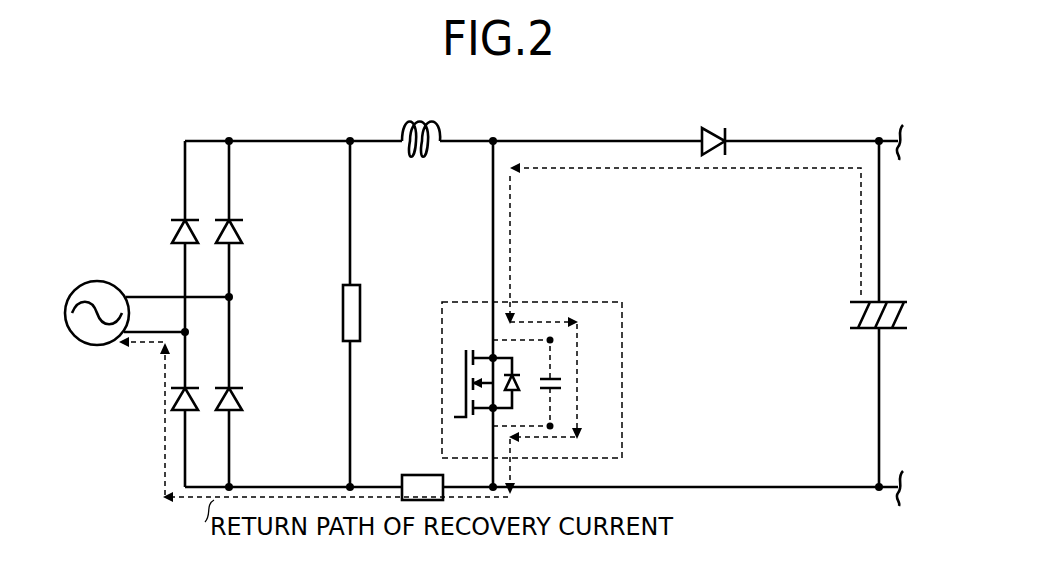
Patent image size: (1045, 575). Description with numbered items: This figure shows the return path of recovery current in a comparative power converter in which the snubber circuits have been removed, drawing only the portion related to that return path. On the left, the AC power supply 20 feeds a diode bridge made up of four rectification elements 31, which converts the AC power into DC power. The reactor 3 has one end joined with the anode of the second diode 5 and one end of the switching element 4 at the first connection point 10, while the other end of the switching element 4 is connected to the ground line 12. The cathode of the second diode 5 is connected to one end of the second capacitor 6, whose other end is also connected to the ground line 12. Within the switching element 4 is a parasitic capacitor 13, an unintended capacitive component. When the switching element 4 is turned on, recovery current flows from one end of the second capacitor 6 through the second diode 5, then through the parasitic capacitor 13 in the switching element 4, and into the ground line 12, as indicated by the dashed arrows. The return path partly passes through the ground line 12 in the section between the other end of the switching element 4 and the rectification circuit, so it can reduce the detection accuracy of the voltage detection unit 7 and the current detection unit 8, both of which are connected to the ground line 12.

The reactor 3 is at (435, 120).
The switching element 4 is at (622, 306).
The second diode 5 is at (700, 132).
The second capacitor 6 is at (886, 330).
The voltage detection unit 7 is at (360, 296).
The current detection unit 8 is at (410, 475).
The first connection point 10 is at (494, 140).
The ground line 12 is at (813, 487).
The parasitic capacitor 13 is at (562, 383).
The AC power supply 20 is at (97, 281).
The rectification element 31 is at (183, 218).